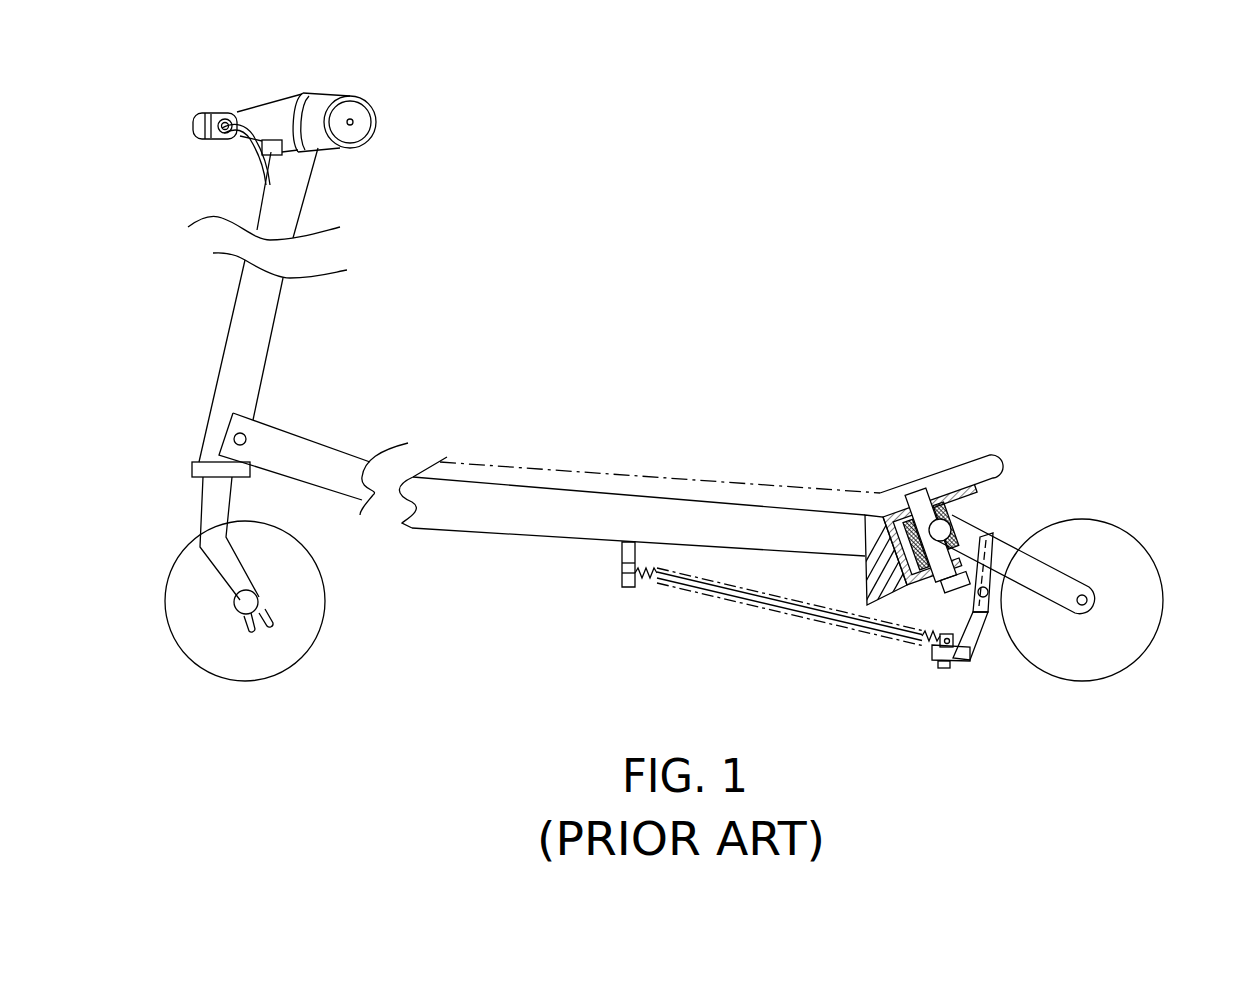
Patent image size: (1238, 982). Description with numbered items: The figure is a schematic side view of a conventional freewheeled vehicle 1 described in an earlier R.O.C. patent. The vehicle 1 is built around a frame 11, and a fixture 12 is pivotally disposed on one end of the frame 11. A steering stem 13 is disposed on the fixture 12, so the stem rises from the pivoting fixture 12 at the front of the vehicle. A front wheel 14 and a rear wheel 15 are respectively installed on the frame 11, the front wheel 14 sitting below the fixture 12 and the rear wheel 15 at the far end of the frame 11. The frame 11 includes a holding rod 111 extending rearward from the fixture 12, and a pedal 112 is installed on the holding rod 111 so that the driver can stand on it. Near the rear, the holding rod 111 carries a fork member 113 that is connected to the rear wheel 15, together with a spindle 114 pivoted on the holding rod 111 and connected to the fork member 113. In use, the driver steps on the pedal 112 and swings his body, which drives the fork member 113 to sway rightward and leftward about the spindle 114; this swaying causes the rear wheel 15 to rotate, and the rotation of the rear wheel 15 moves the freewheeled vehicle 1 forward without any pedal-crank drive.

The freewheeled vehicle 1 is at (154, 176).
The frame 11 is at (344, 442).
The holding rod 111 is at (514, 512).
The pedal 112 is at (663, 473).
The fork member 113 is at (1030, 560).
The spindle 114 is at (958, 519).
The fixture 12 is at (238, 338).
The steering stem 13 is at (273, 110).
The front wheel 14 is at (193, 602).
The rear wheel 15 is at (1133, 620).